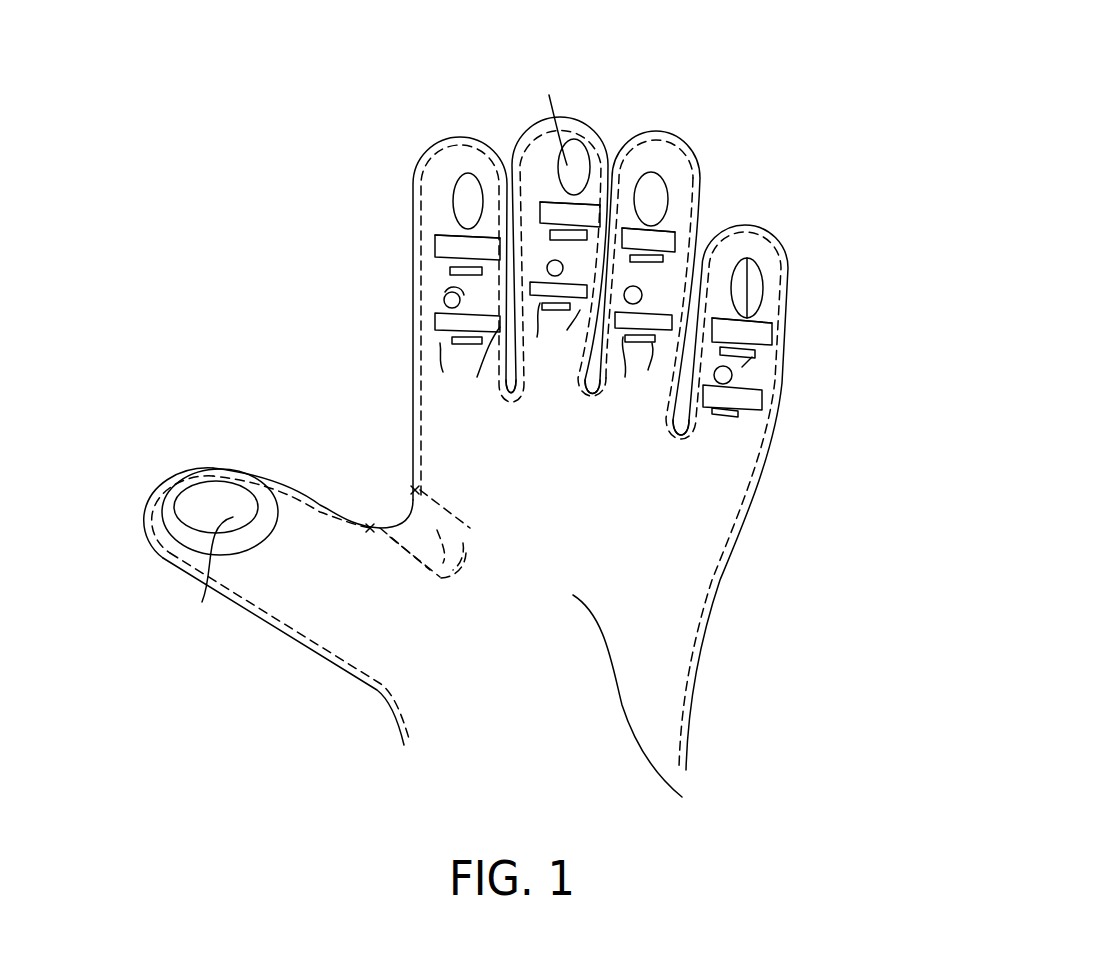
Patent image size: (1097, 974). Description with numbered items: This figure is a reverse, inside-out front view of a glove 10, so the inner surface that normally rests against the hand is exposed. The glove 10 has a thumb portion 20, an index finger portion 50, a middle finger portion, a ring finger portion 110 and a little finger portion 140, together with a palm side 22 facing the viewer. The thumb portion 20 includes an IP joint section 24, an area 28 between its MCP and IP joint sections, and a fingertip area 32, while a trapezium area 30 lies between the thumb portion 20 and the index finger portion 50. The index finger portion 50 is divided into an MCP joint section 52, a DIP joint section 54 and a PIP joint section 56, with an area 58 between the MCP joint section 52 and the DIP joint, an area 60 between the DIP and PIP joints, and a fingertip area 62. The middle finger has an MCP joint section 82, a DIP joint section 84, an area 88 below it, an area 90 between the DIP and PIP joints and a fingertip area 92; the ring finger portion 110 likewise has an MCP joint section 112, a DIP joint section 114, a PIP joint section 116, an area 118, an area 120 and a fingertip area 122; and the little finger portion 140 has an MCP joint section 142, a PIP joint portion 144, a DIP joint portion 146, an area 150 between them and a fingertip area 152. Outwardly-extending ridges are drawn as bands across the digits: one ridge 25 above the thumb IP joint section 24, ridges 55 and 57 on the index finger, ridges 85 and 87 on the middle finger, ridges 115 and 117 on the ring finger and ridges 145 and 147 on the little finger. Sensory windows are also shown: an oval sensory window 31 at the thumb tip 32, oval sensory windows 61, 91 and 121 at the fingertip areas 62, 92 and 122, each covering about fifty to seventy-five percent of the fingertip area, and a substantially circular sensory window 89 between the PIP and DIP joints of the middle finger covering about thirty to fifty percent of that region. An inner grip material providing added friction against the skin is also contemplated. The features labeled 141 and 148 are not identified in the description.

The glove 10 is at (725, 533).
The thumb portion 20 is at (165, 536).
The palm side 22 is at (425, 650).
The IP joint section 24 is at (323, 533).
The ridge 25 is at (247, 553).
The area between MCP joint section and IP joint section 28 is at (355, 590).
The trapezium area 30 is at (437, 535).
The sensory window 31 is at (206, 572).
The fingertip area 32 is at (198, 503).
The index finger portion 50 is at (410, 190).
The MCP joint section 52 is at (447, 298).
The DIP joint section 54 is at (484, 367).
The ridge 55 is at (459, 369).
The PIP joint section 56 is at (448, 268).
The ridge 57 is at (482, 268).
The area between MCP joint section and DIP joint section 58 is at (447, 415).
The area between DIP joint section and PIP joint section 60 is at (465, 290).
The sensory window 61 is at (447, 224).
The fingertip area 62 is at (462, 176).
The MCP joint section 82 is at (594, 88).
The DIP joint section 84 is at (547, 334).
The ridge 85 is at (597, 225).
The ridge 87 is at (539, 282).
The area between MCP joint section and DIP joint section 88 is at (548, 383).
The sensory window 89 is at (563, 268).
The area between DIP joint section and PIP joint section 90 is at (552, 208).
The sensory window 91 is at (548, 111).
The fingertip area 92 is at (572, 162).
The ring finger portion 110 is at (692, 110).
The MCP joint section 112 is at (650, 475).
The DIP joint section 114 is at (648, 276).
The ridge 115 is at (643, 361).
The PIP joint section 116 is at (677, 243).
The ridge 117 is at (673, 257).
The area between MCP joint section and DIP joint section 118 is at (647, 297).
The area between DIP joint section and PIP joint section 120 is at (622, 280).
The sensory window 121 is at (653, 177).
The fingertip area 122 is at (643, 84).
The little finger portion 140 is at (800, 222).
The little fingertip aperture 141 is at (747, 265).
The MCP joint section 142 is at (700, 500).
The PIP joint portion 144 is at (733, 374).
The ridge 145 is at (767, 403).
The DIP joint portion 146 is at (763, 290).
The ridge 147 is at (760, 352).
The little finger base 148 is at (705, 430).
The area between DIP joint section and PIP joint section 150 is at (742, 367).
The fingertip area 152 is at (765, 307).